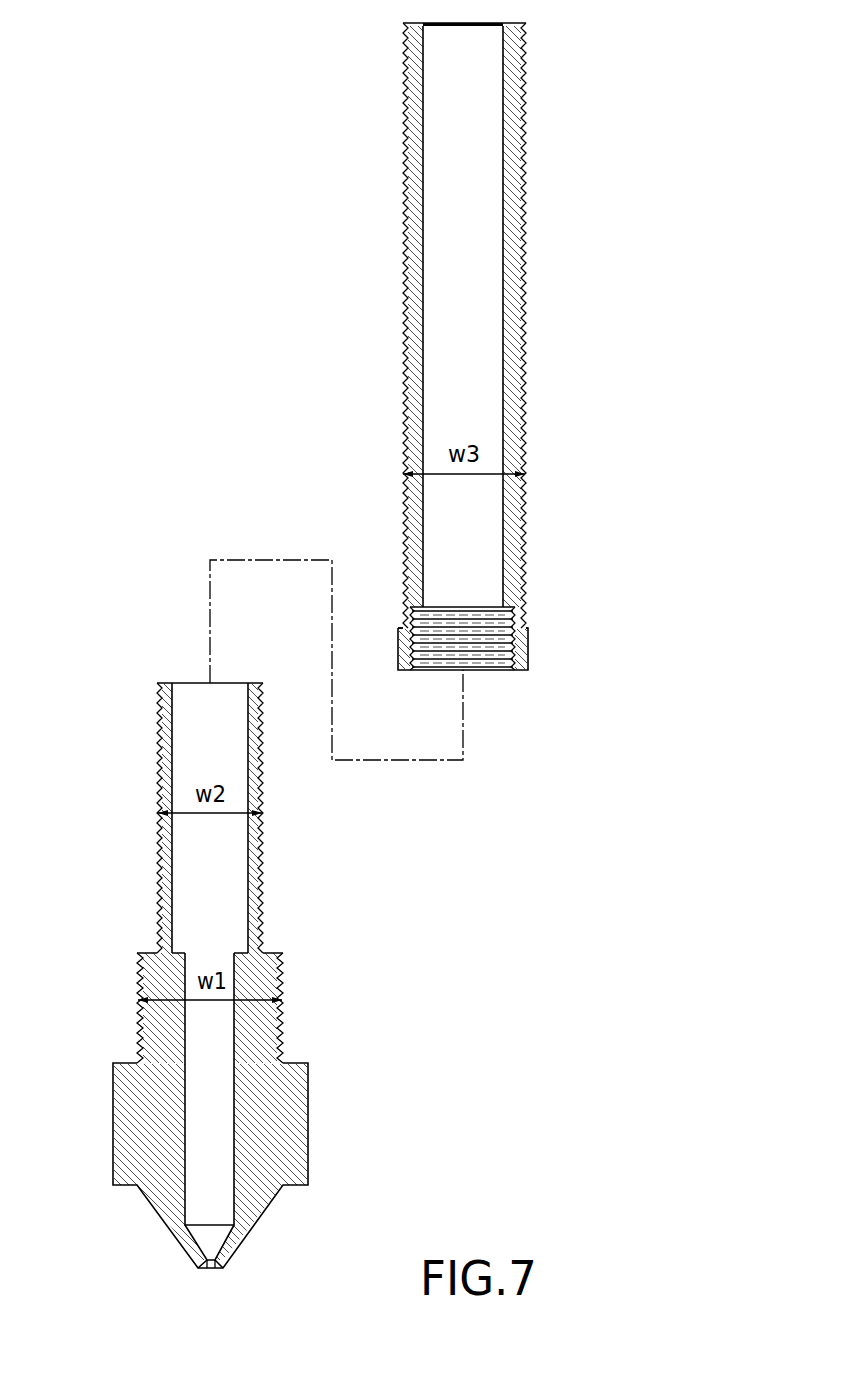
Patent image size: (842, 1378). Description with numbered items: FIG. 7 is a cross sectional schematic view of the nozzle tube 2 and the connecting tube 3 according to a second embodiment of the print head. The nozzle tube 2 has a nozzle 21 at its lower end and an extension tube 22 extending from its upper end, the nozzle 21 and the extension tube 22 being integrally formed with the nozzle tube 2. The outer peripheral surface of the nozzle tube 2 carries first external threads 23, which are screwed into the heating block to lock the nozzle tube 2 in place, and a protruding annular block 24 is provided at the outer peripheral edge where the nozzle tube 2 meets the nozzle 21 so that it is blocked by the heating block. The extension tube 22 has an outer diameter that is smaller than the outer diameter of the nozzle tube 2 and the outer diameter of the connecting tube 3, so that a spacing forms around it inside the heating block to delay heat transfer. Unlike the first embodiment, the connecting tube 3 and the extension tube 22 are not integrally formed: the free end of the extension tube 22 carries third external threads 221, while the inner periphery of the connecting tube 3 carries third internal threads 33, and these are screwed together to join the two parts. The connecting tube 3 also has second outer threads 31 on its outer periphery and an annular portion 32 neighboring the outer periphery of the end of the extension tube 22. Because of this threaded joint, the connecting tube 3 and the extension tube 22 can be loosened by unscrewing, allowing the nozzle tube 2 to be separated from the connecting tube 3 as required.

The nozzle tube 2 is at (260, 977).
The nozzle 21 is at (228, 1250).
The extension tube 22 is at (262, 890).
The third external threads 221 is at (157, 718).
The first external threads 23 is at (283, 1047).
The protruding annular block 24 is at (298, 1145).
The connecting tube 3 is at (531, 242).
The second outer threads 31 is at (522, 48).
The annular portion 32 is at (523, 650).
The third internal threads 33 is at (512, 640).